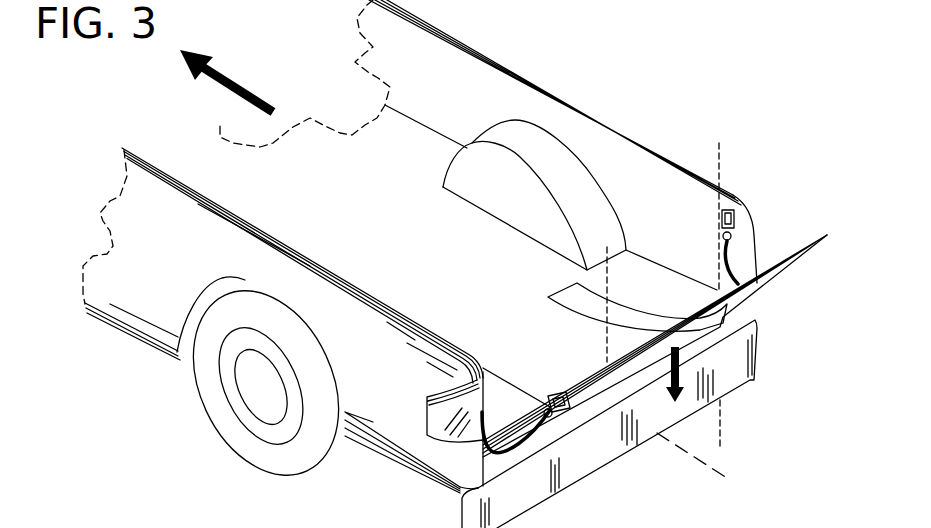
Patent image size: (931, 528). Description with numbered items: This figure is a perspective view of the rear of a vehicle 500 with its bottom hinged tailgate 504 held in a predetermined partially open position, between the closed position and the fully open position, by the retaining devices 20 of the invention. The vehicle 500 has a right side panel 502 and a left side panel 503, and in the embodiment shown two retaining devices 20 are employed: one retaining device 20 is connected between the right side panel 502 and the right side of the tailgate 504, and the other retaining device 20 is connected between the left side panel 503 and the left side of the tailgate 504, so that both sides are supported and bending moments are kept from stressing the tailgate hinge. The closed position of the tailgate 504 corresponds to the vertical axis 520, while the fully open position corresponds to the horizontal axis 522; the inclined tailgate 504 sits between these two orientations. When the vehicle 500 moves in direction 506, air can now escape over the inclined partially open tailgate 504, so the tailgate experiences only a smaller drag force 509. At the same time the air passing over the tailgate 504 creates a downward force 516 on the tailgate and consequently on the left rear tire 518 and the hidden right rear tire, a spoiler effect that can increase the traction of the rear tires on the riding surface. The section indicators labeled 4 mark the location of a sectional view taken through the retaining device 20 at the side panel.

The vehicle 500 is at (107, 237).
The right side panel 502 is at (660, 153).
The left side panel 503 is at (395, 458).
The tailgate 504 is at (773, 298).
The direction 506 is at (247, 82).
The drag force 509 is at (553, 291).
The downward force 516 is at (665, 352).
The left rear tire 518 is at (210, 412).
The vertical axis 520 is at (590, 268).
The horizontal axis 522 is at (710, 466).
The retaining device 20 is at (788, 225).
The section line 4- 4 is at (700, 167).